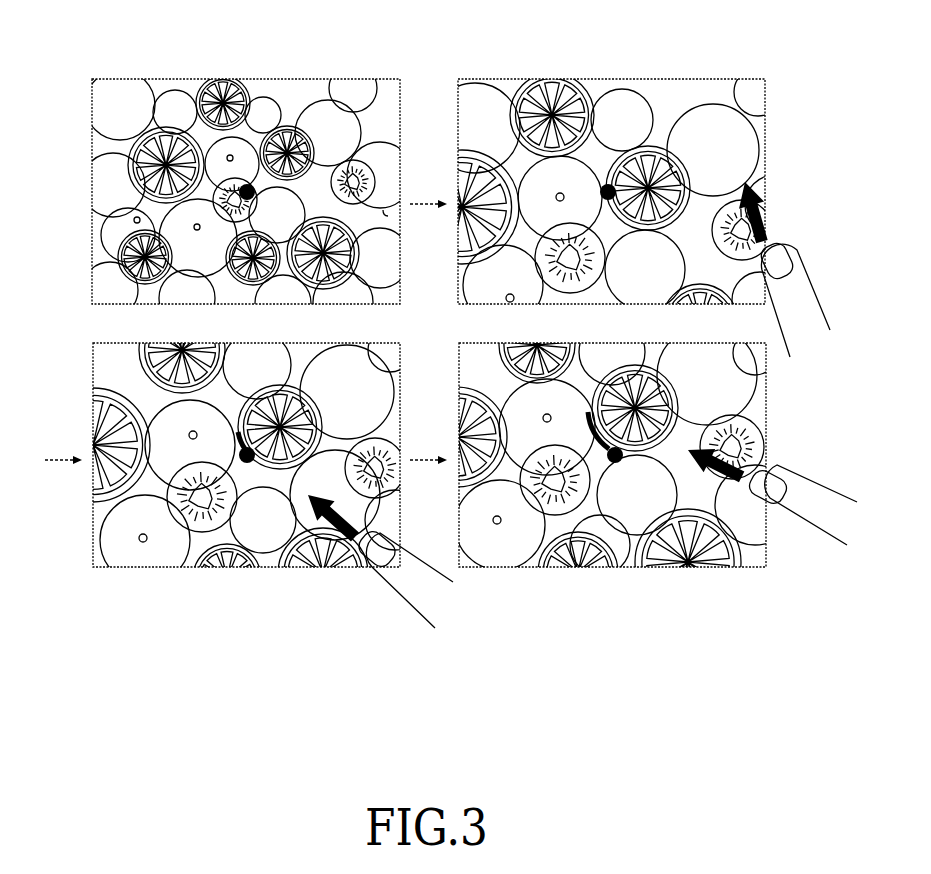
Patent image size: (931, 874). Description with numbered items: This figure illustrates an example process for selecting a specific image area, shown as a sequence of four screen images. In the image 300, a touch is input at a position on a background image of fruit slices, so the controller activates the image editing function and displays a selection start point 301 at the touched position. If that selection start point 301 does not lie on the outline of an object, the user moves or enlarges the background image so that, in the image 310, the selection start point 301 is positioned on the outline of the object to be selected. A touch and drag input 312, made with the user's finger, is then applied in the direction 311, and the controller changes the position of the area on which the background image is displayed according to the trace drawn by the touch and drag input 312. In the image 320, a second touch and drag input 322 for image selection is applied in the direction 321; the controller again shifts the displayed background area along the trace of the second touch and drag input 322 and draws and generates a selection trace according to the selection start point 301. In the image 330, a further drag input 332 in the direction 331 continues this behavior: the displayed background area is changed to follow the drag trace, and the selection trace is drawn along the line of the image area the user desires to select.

The image 300 is at (222, 80).
The selection start point 301 is at (250, 186).
The image 310 is at (622, 80).
The direction 311 is at (767, 205).
The touch and drag input 312 is at (803, 295).
The image 320 is at (142, 567).
The direction 321 is at (302, 535).
The second touch and drag input 322 is at (380, 587).
The image 330 is at (507, 567).
The direction 331 is at (713, 480).
The drag input 332 is at (793, 523).